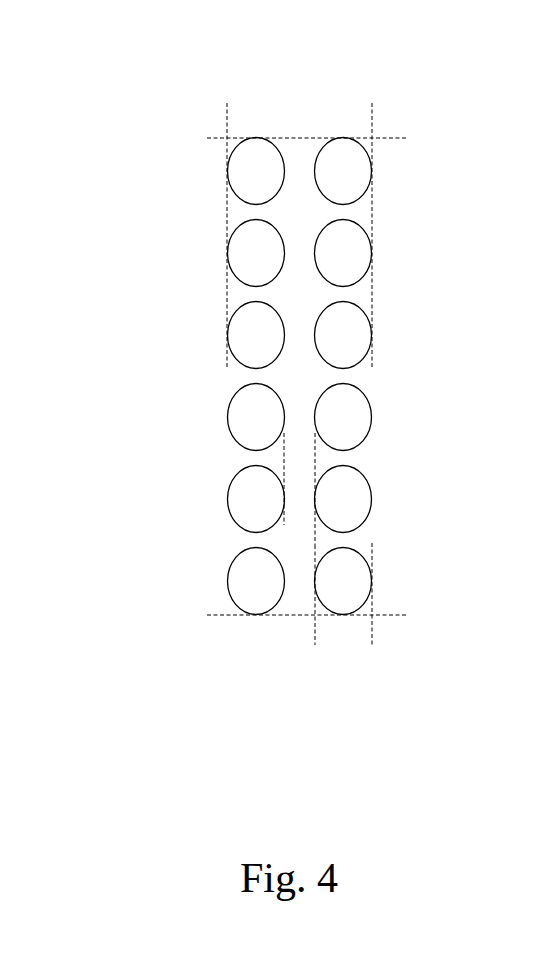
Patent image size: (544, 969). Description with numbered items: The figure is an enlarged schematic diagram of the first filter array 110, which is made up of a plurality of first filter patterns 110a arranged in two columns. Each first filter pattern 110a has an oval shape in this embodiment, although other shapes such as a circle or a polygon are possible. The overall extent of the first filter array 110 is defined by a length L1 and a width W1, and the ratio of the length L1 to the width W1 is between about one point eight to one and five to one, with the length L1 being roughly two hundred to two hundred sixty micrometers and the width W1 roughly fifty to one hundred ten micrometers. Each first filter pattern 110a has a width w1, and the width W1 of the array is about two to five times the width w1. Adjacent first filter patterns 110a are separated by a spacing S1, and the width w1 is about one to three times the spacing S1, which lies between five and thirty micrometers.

The first filter array 110 is at (81, 49).
The first filter pattern 110a is at (355, 499).
The width of the first filter array W1 is at (371, 112).
The length of the first filter array L1 is at (394, 139).
The spacing between two adjacent first filter patterns S1 is at (355, 455).
The width of the first filter pattern w1 is at (371, 643).